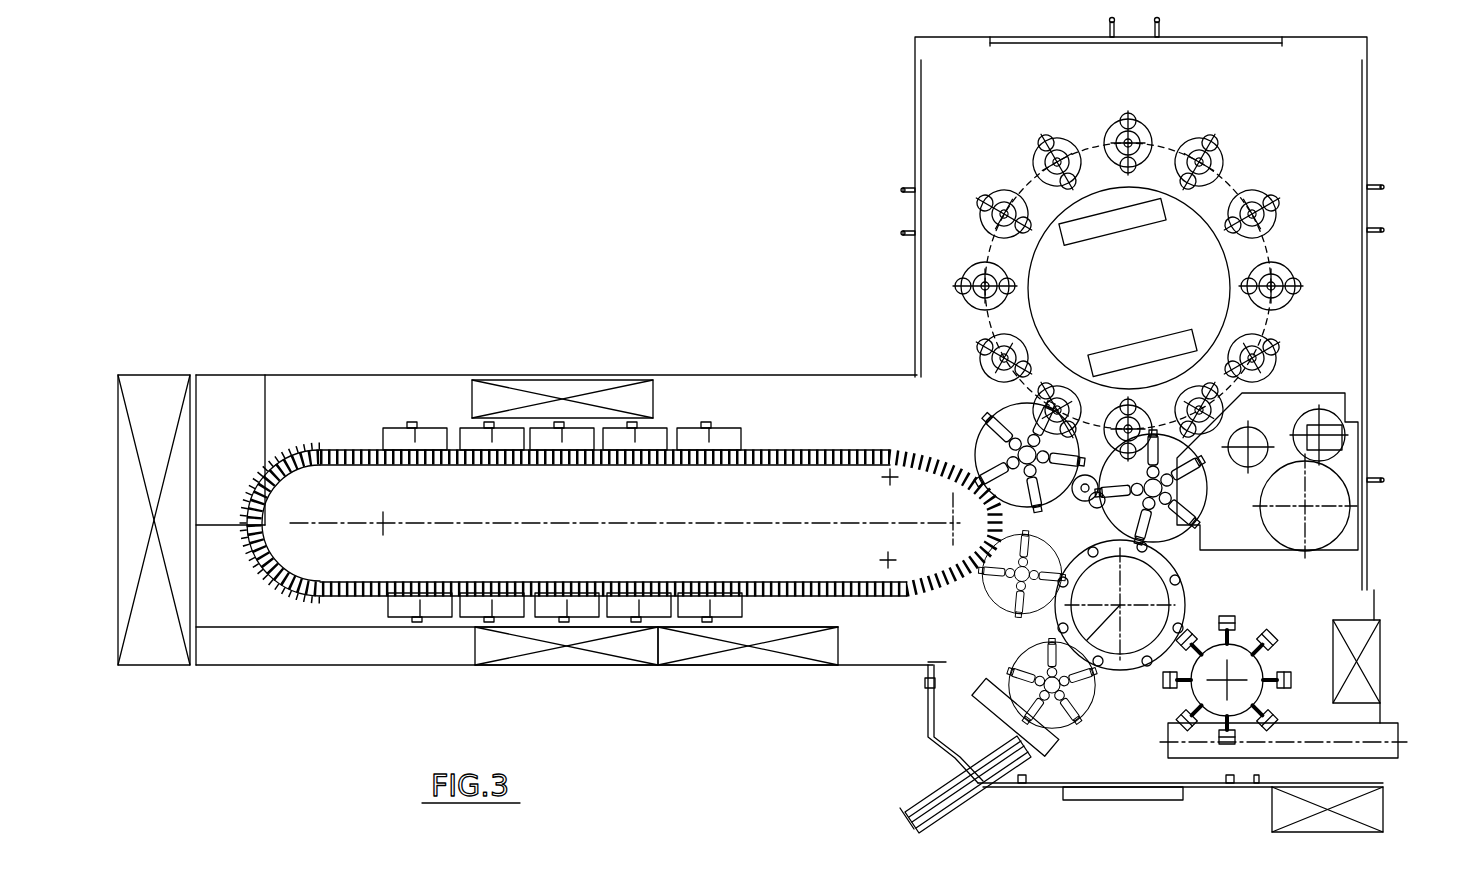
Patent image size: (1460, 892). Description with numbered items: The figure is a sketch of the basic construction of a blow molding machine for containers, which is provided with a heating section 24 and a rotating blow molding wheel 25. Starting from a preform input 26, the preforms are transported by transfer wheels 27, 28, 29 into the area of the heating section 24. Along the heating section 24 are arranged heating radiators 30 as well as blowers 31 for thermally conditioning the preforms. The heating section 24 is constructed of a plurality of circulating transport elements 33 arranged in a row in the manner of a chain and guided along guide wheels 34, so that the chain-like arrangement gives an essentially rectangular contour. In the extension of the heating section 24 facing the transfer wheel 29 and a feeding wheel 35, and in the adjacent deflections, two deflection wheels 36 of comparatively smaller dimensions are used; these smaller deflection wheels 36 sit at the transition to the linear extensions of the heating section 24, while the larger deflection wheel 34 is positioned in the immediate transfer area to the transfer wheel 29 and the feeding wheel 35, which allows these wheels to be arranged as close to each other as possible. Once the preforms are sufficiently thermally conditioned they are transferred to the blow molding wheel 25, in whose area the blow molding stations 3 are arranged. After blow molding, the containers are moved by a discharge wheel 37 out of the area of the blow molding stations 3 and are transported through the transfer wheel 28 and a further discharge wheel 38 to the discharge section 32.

The blow molding station 3 is at (968, 268).
The heating section 24 is at (696, 407).
The blow molding wheel 25 is at (1045, 197).
The preform input 26 is at (963, 787).
The transfer wheel 27 is at (1068, 727).
The transfer wheel 28 is at (1127, 673).
The transfer wheel 29 is at (997, 600).
The heating radiator 30 is at (433, 428).
The blower 31 is at (556, 385).
The discharge section 32 is at (1387, 750).
The circulating transport element 33 is at (357, 582).
The guide wheel 34 is at (385, 520).
The feeding wheel 35 is at (997, 407).
The deflection wheel 36 is at (890, 477).
The discharge wheel 37 is at (1200, 510).
The discharge wheel 38 is at (1237, 694).